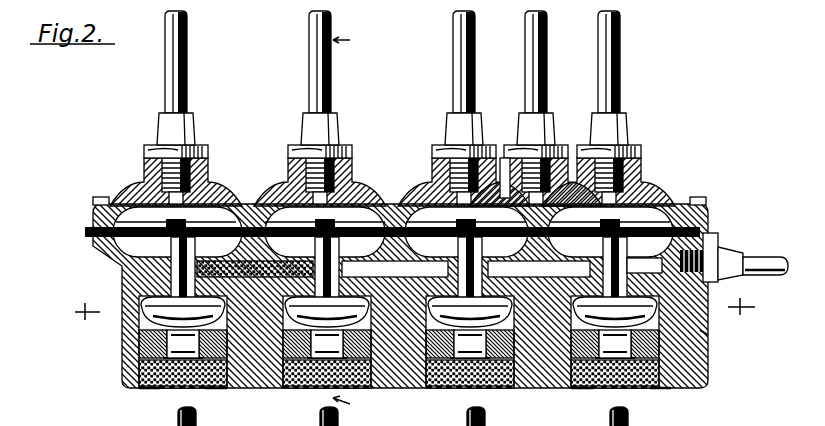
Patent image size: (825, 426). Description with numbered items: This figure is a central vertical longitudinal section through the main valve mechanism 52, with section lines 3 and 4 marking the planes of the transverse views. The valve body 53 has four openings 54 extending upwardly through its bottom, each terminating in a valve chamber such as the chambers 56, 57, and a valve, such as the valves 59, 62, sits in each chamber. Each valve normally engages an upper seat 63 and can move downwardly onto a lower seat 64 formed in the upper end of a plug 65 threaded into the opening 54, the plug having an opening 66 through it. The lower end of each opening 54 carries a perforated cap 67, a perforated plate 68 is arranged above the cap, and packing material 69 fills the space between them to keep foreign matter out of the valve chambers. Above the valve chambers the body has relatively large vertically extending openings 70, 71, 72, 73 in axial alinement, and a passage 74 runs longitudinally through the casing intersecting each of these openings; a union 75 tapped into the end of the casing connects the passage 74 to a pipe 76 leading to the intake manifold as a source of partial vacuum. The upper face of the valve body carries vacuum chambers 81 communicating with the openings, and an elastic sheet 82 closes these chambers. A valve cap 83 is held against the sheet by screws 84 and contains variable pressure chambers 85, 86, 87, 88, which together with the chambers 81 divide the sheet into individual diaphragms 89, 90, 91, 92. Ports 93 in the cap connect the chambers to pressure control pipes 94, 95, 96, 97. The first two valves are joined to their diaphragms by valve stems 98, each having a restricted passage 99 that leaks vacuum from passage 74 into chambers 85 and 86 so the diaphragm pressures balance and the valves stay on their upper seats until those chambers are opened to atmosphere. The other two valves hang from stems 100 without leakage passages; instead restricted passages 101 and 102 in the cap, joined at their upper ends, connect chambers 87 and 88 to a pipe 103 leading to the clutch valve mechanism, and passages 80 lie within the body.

The section line 3- 3 is at (402, 309).
The section line 4- 4 is at (346, 224).
The main valve mechanism 52 is at (672, 192).
The valve body 53 is at (700, 338).
The opening 54 is at (240, 390).
The valve chamber 56 is at (568, 269).
The valve chamber 57 is at (535, 269).
The valve 59 is at (142, 306).
The valve 62 is at (615, 308).
The upper seat 63 is at (128, 292).
The lower seat 64 is at (168, 338).
The plug 65 is at (140, 350).
The opening 66 is at (140, 366).
The perforated cap 67 is at (160, 390).
The perforated plate 68 is at (205, 389).
The packing material 69 is at (300, 390).
The vertically extending opening 70 is at (170, 255).
The vertically extending opening 71 is at (308, 268).
The vertically extending opening 72 is at (458, 256).
The vertically extending opening 73 is at (605, 268).
The passage 74 is at (524, 255).
The union 75 is at (722, 242).
The pipe 76 is at (760, 257).
The passage 80 is at (395, 269).
The vacuum chamber 81 is at (112, 258).
The elastic sheet 82 is at (93, 232).
The valve cap 83 is at (262, 204).
The screw 84 is at (101, 197).
The variable pressure chamber 85 is at (142, 200).
The variable pressure chamber 86 is at (365, 200).
The variable pressure chamber 87 is at (418, 200).
The variable pressure chamber 88 is at (650, 192).
The diaphragm 89 is at (177, 231).
The diaphragm 90 is at (325, 231).
The diaphragm 91 is at (466, 231).
The diaphragm 92 is at (610, 229).
The port 93 is at (212, 170).
The pressure control pipe 94 is at (164, 74).
The pressure control pipe 95 is at (309, 62).
The pressure control pipe 96 is at (453, 56).
The pressure control pipe 97 is at (620, 51).
The valve stem 98 is at (197, 247).
The restricted passage 99 is at (255, 269).
The stem 100 is at (569, 269).
The restricted passage 101 is at (506, 188).
The restricted passage 102 is at (574, 188).
The pipe 103 is at (547, 84).